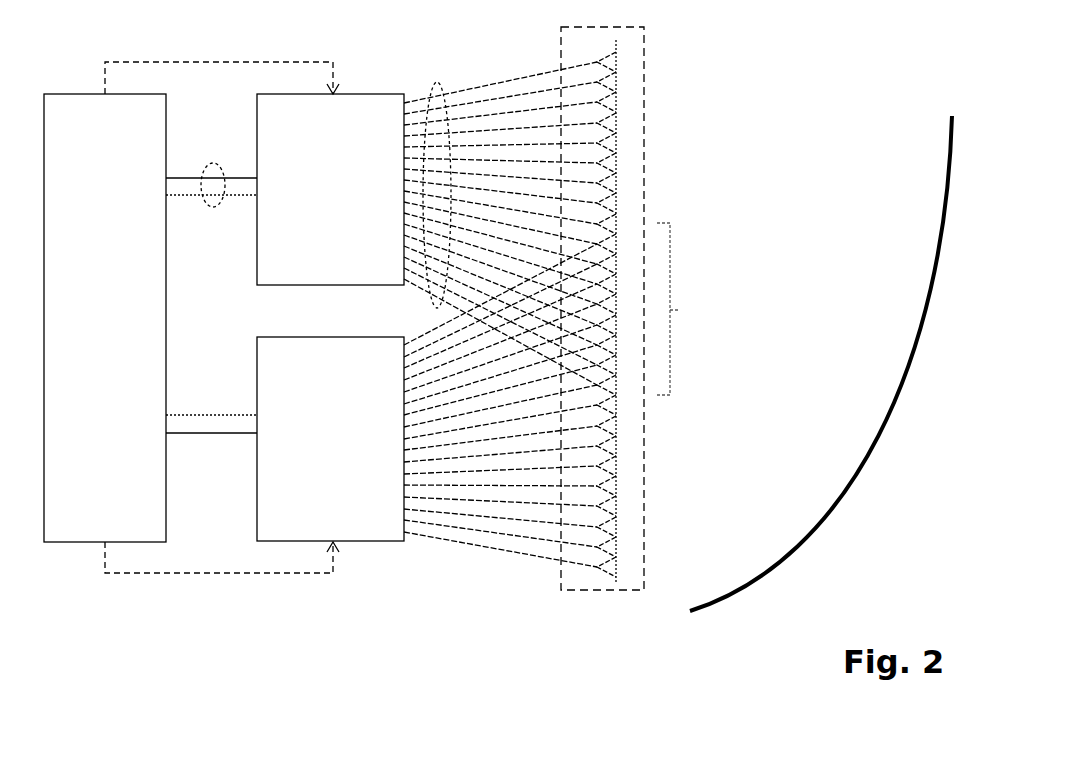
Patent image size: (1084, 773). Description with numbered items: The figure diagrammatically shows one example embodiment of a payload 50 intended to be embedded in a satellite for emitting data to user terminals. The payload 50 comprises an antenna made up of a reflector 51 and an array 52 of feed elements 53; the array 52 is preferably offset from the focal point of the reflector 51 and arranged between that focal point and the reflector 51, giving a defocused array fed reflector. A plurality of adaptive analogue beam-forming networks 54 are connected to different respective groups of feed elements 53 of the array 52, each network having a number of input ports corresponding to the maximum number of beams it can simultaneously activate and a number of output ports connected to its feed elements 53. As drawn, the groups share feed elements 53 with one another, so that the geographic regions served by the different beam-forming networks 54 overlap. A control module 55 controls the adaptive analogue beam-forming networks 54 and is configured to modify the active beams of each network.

The payload 50 is at (789, 75).
The reflector 51 is at (860, 492).
The array of feed elements 52 is at (646, 30).
The feed elements 53 is at (618, 62).
The adaptive analogue beam-forming network 54 is at (427, 310).
The control module 55 is at (191, 317).